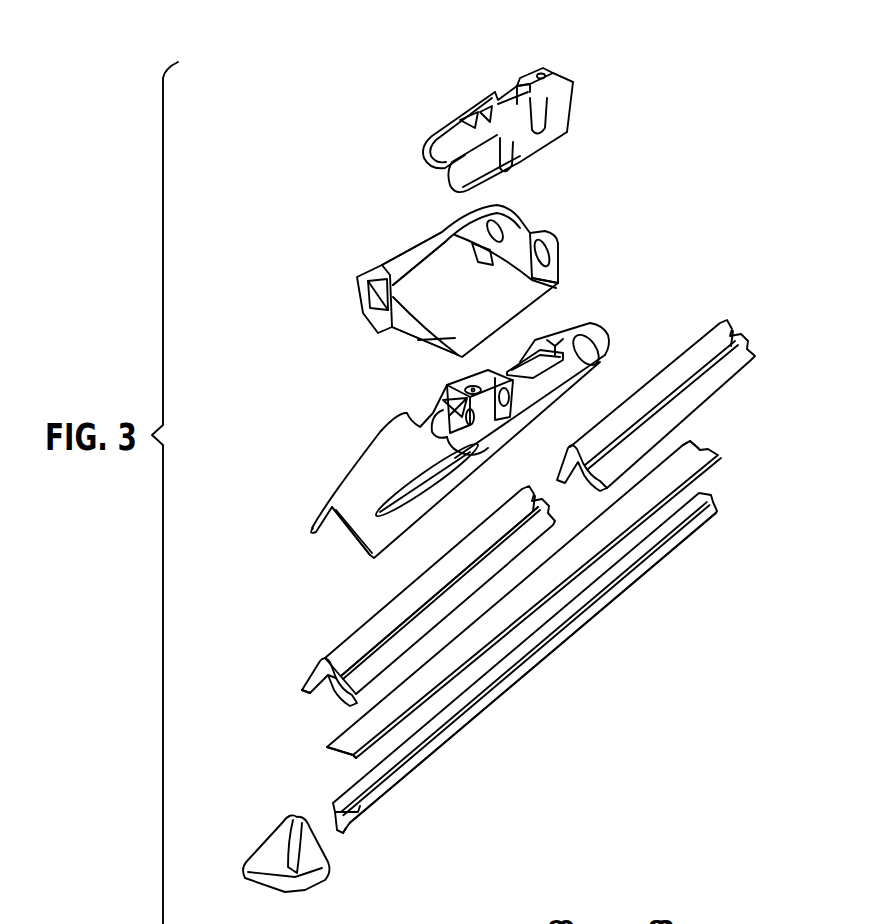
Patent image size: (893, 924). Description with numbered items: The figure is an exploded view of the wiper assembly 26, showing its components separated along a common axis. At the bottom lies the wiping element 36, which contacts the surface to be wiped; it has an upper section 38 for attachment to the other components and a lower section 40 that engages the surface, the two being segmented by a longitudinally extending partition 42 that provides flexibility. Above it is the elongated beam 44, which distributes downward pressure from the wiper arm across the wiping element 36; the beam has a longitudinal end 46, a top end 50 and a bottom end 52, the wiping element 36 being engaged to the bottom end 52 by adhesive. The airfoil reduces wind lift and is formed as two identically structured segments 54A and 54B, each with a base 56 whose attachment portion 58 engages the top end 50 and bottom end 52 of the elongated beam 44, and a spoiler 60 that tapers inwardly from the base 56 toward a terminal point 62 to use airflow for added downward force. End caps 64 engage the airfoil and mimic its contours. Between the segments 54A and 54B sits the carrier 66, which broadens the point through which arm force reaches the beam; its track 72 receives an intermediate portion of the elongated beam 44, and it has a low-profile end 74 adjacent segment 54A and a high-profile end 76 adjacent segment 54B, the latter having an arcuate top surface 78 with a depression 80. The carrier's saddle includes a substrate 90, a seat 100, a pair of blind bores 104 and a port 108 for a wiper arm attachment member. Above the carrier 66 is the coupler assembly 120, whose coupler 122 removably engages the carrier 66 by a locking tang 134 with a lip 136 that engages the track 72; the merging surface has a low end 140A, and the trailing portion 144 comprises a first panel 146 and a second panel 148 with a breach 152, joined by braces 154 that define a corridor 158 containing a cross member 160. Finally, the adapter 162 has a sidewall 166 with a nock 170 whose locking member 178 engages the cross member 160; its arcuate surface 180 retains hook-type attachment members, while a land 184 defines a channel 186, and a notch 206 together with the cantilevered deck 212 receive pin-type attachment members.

The wiper assembly 26 is at (262, 178).
The wiping element 36 is at (556, 672).
The upper section 38 is at (662, 540).
The lower section 40 is at (648, 573).
The partition 42 is at (365, 812).
The elongated beam 44 is at (510, 617).
The longitudinal end 46 is at (335, 750).
The top end 50 is at (688, 460).
The bottom end 52 is at (340, 757).
The airfoil segment 54A is at (499, 496).
The airfoil segment 54B is at (718, 310).
The base 56 is at (302, 690).
The attachment portion 58 is at (303, 670).
The spoiler 60 is at (335, 688).
The terminal point 62 is at (338, 632).
The end caps 64 is at (350, 875).
The carrier 66 is at (268, 500).
The track 72 is at (338, 547).
The low-profile end 74 is at (629, 606).
The high-profile end 76 is at (432, 471).
The arcuate top surface 78 is at (358, 457).
The depression 80 is at (425, 424).
The substrate 90 is at (608, 330).
The seat 100 is at (474, 396).
The blind bores 104 is at (480, 428).
The port 108 is at (510, 398).
The coupler assembly 120 is at (461, 260).
The coupler 122 is at (340, 275).
The locking tang 134 is at (360, 312).
The lip 136 is at (358, 292).
The low end 140A is at (390, 266).
The trailing portion 144 is at (593, 239).
The first panel 146 is at (412, 243).
The second panel 148 is at (567, 275).
The breach 152 is at (563, 258).
The braces 154 is at (455, 338).
The corridor 158 is at (400, 352).
The cross member 160 is at (483, 250).
The adapter 162 is at (497, 112).
The sidewall 166 is at (565, 138).
The nock 170 is at (512, 178).
The locking member 178 is at (515, 170).
The arcuate surface 180 is at (423, 152).
The land 184 is at (562, 72).
The channel 186 is at (578, 72).
The notch 206 is at (570, 118).
The deck 212 is at (525, 80).